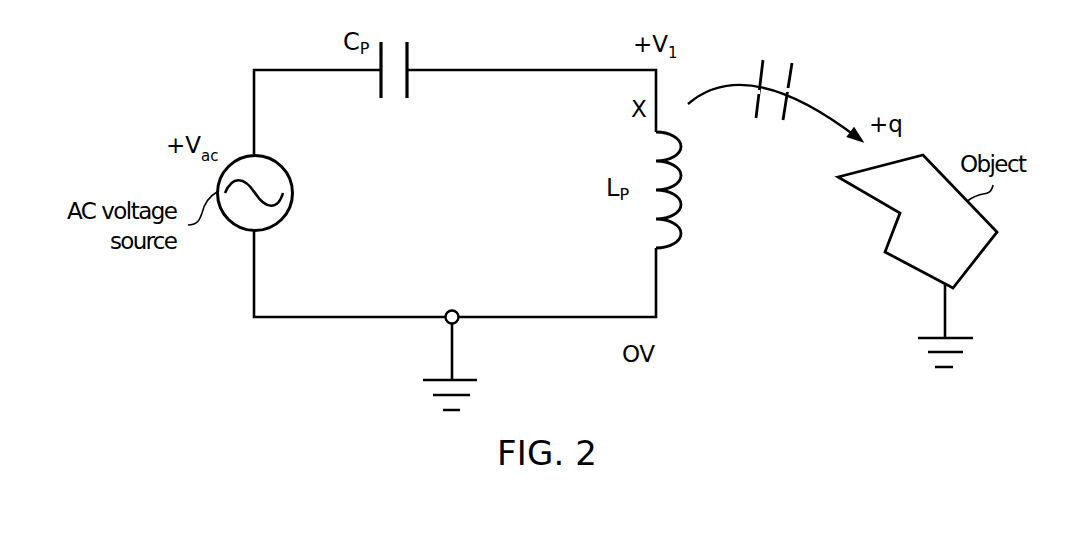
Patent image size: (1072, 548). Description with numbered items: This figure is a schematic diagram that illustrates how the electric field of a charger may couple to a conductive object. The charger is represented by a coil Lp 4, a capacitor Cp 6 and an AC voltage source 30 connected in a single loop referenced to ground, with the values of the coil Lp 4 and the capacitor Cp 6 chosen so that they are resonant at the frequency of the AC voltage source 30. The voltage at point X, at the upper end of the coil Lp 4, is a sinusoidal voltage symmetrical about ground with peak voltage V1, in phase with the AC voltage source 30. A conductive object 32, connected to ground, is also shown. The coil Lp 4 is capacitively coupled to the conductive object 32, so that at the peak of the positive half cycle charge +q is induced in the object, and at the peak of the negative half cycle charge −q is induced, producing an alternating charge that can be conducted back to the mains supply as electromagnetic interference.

The capacitor Cp 6 is at (408, 55).
The AC voltage source 30 is at (292, 192).
The coil Lp 4 is at (680, 203).
The conductive object 32 is at (960, 247).